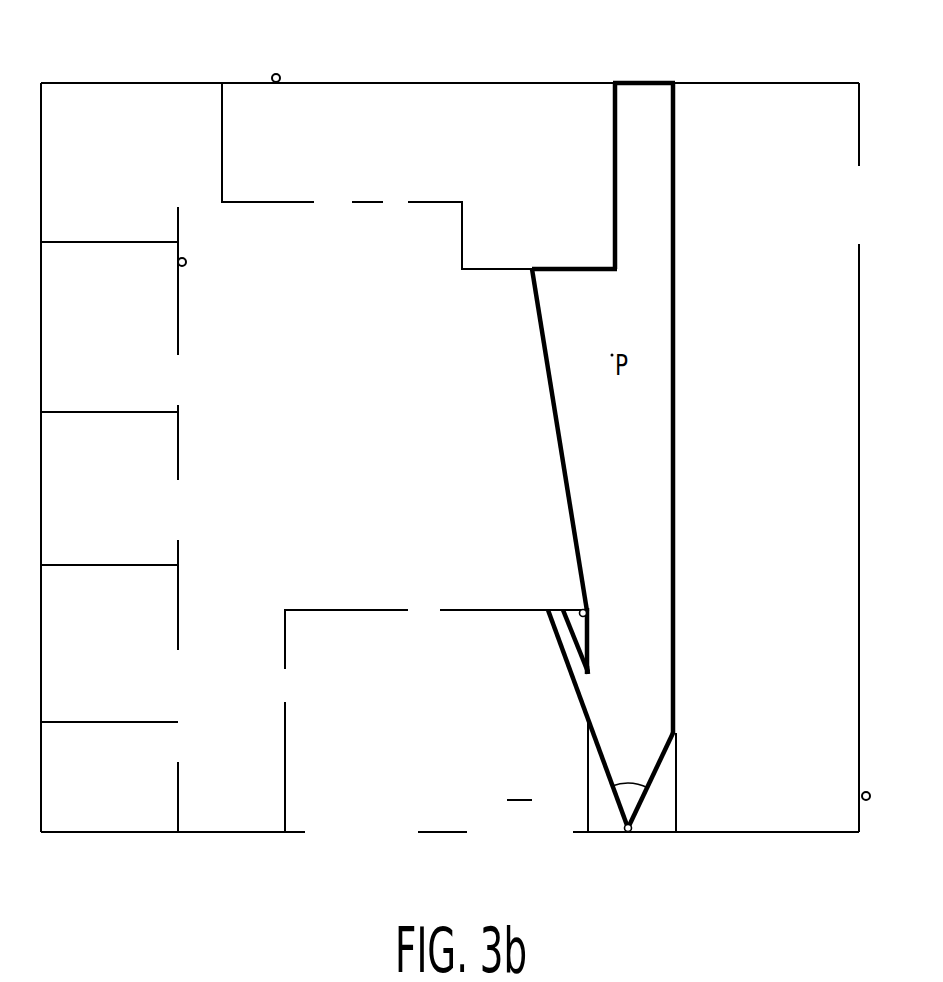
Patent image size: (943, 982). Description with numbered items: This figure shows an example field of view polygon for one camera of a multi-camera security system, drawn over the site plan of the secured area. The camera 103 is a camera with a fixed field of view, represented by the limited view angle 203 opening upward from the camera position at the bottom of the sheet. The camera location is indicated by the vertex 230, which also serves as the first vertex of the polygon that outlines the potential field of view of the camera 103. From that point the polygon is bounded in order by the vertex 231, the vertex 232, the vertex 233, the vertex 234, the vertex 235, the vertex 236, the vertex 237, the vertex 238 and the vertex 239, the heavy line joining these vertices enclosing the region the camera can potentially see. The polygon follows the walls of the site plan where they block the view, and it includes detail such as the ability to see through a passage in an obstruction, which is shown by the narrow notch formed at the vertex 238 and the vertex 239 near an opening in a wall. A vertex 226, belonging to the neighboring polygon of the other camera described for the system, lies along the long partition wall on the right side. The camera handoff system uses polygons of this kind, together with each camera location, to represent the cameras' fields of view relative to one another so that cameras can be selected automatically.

The camera 103 is at (625, 832).
The limited view angle 203 is at (630, 783).
The vertex 226 is at (673, 280).
The vertex 230 is at (632, 832).
The vertex 231 is at (676, 733).
The vertex 232 is at (673, 83).
The vertex 233 is at (615, 83).
The vertex 234 is at (615, 269).
The vertex 235 is at (532, 269).
The vertex 236 is at (590, 610).
The vertex 237 is at (590, 673).
The vertex 238 is at (563, 610).
The vertex 239 is at (548, 610).